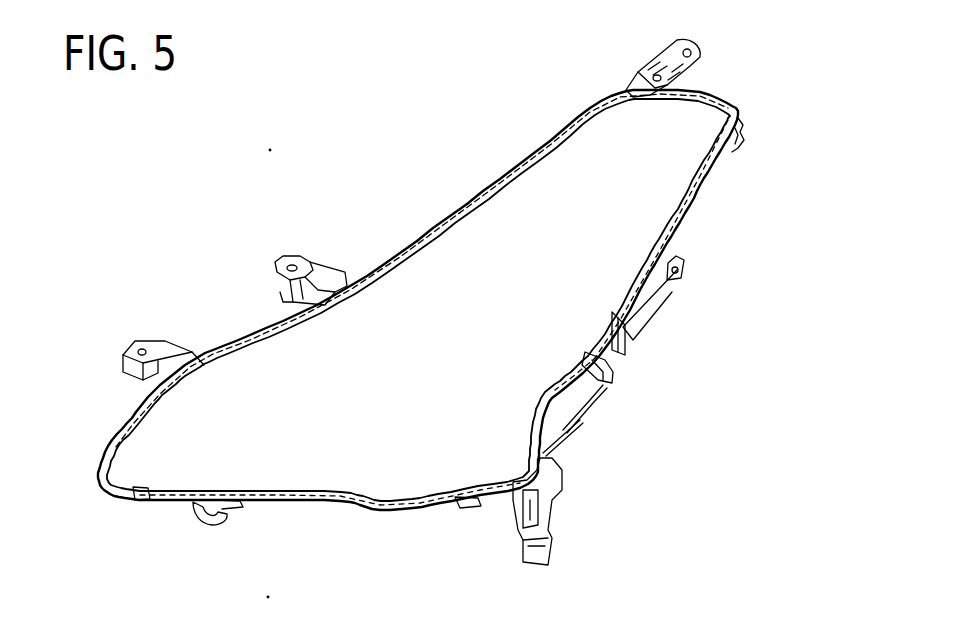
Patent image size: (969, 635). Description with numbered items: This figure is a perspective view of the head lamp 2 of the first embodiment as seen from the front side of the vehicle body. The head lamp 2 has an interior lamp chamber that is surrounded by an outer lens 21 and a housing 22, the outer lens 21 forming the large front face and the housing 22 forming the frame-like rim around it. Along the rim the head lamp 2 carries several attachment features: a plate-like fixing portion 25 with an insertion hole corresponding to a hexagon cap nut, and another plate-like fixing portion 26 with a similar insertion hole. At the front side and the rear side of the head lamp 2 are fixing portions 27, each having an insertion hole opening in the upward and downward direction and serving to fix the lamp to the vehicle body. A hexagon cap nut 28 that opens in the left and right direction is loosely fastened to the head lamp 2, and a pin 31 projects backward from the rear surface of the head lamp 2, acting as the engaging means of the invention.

The head lamp 2 is at (543, 111).
The outer lens 21 is at (510, 210).
The housing 22 is at (453, 208).
The fixing portion 25 is at (290, 255).
The fixing portion 26 is at (203, 523).
The fixing portion 27 is at (145, 337).
The hexagon cap nut 28 is at (557, 542).
The pin 31 is at (733, 143).